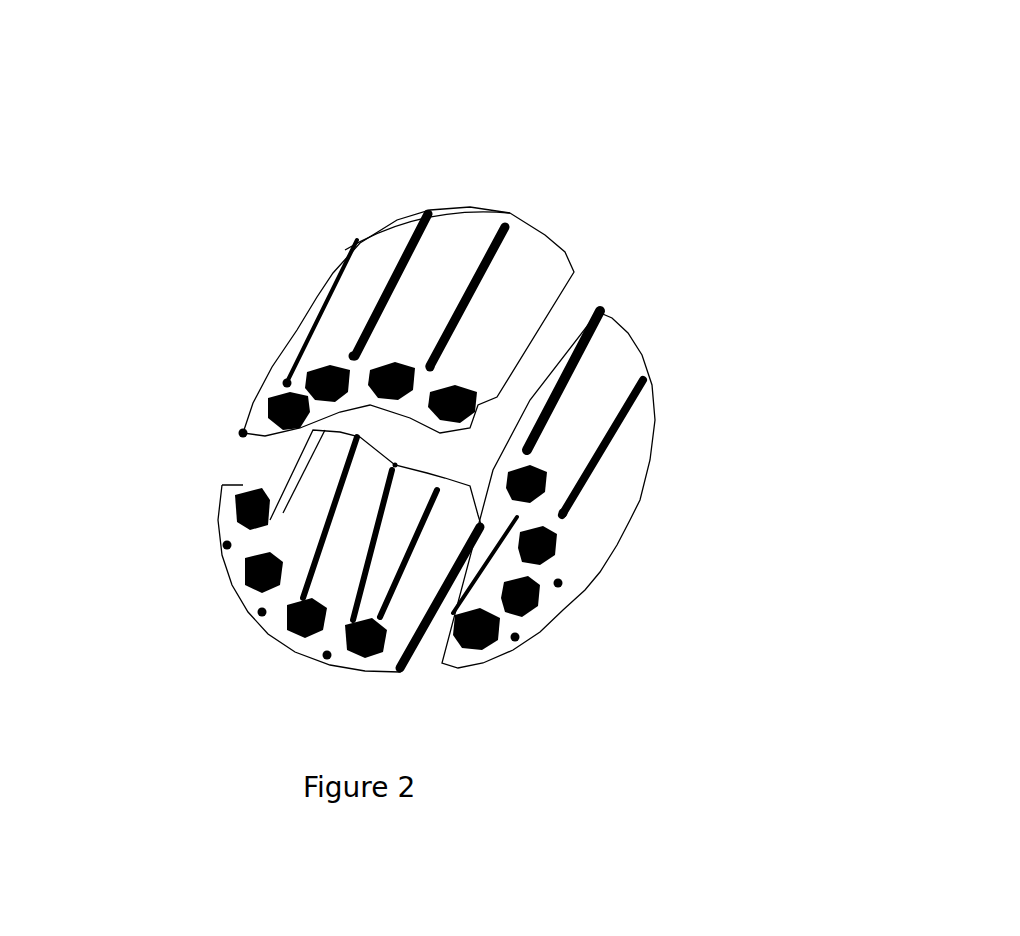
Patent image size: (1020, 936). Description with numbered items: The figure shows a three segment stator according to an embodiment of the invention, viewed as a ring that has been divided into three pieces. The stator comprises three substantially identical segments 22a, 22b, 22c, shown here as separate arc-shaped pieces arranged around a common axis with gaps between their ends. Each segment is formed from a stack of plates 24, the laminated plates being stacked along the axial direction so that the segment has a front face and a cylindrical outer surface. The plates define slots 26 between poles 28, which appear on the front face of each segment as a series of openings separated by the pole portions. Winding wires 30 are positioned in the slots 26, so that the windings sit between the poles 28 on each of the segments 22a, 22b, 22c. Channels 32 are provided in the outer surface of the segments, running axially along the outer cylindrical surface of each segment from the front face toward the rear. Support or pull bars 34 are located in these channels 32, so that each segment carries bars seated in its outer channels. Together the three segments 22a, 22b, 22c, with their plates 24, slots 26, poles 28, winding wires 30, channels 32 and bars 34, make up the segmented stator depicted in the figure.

The segment 22a is at (487, 172).
The segment 22b is at (688, 466).
The segment 22c is at (218, 619).
The plates 24 is at (578, 248).
The slots 26 is at (230, 569).
The poles 28 is at (516, 622).
The winding wires 30 is at (540, 591).
The channels 32 is at (270, 387).
The support or pull bars 34 is at (622, 322).